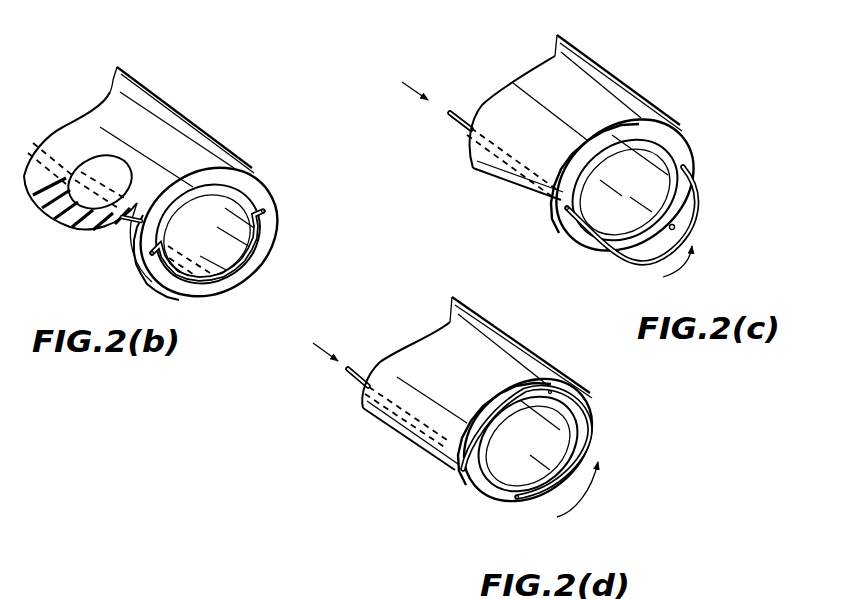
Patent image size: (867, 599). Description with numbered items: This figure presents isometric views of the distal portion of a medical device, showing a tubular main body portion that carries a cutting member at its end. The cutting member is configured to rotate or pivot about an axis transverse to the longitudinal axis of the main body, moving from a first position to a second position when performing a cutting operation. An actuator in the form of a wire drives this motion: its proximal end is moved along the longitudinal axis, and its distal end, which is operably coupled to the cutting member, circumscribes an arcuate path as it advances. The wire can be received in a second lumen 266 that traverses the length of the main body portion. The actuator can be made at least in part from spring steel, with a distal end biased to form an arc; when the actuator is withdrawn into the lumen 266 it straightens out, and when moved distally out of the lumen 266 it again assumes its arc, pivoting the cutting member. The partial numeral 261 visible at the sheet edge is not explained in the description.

The second lumen 266 is at (126, 224).
The partial numeral (cropped) 261 is at (239, 593).